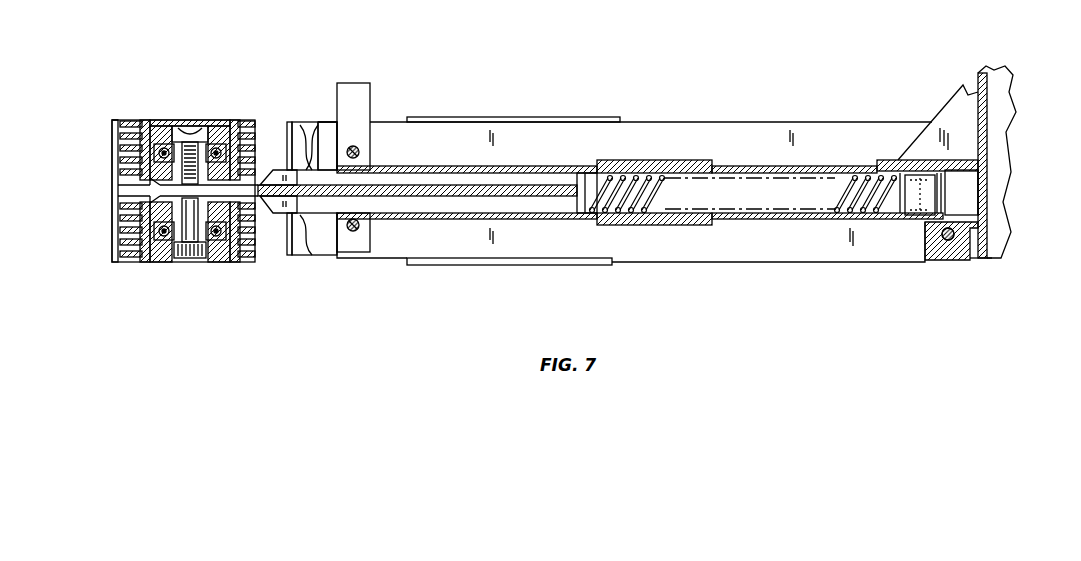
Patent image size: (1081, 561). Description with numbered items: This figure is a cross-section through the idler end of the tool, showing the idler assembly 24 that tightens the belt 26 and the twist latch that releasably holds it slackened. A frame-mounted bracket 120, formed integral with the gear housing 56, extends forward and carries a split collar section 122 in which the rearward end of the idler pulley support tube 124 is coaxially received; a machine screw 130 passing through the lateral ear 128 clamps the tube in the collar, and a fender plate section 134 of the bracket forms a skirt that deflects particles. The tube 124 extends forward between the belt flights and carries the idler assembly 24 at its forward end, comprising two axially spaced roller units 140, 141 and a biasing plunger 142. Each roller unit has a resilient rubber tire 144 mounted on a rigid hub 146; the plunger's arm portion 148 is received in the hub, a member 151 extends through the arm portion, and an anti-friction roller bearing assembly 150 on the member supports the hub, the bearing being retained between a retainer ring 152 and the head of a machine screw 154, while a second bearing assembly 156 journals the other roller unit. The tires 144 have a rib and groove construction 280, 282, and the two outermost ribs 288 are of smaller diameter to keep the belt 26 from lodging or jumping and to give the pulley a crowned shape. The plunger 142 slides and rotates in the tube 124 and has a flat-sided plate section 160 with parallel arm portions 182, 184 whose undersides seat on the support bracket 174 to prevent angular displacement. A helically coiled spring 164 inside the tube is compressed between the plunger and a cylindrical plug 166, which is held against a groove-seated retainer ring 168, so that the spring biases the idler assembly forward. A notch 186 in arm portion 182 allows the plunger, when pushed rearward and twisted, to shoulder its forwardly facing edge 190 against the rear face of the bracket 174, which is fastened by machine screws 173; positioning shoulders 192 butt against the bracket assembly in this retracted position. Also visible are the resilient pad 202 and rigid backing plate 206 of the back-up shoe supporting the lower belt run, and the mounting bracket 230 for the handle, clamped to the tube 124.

The idler assembly 24 is at (158, 285).
The belt 26 is at (522, 116).
The gear housing 56 is at (1000, 90).
The frame-mounted bracket 120 is at (950, 103).
The split collar section 122 is at (880, 160).
The idler pulley support tube 124 is at (780, 222).
The lateral ear 128 is at (935, 260).
The machine screw 130 is at (948, 242).
The fender plate section 134 is at (985, 178).
The roller unit 140 is at (256, 104).
The roller unit 141 is at (222, 268).
The biasing plunger 142 is at (312, 255).
The resilient tire 144 is at (240, 118).
The rigid hub 146 is at (160, 130).
The arm portion 148 is at (160, 190).
The anti-friction roller bearing assembly 150 is at (183, 125).
The member 151 is at (226, 152).
The retainer ring 152 is at (158, 125).
The machine screw 154 is at (222, 122).
The bearing assembly 156 is at (198, 258).
The plate section 160 is at (428, 190).
The helically coiled spring 164 is at (657, 186).
The cylindrical plug 166 is at (908, 218).
The retainer ring 168 is at (968, 206).
The machine screws 173 is at (361, 152).
The support bracket 174 is at (358, 83).
The arm portion 182 is at (537, 168).
The arm portion 184 is at (538, 220).
The notch 186 is at (290, 140).
The forwardly facing edge 190 is at (325, 160).
The positioning shoulders 192 is at (290, 255).
The resilient pad 202 is at (305, 122).
The backing plate 206 is at (655, 130).
The mounting bracket 230 is at (690, 160).
The fin column 280 is at (118, 185).
The side plate 282 is at (118, 160).
The outermost tire ribs 288 is at (140, 125).